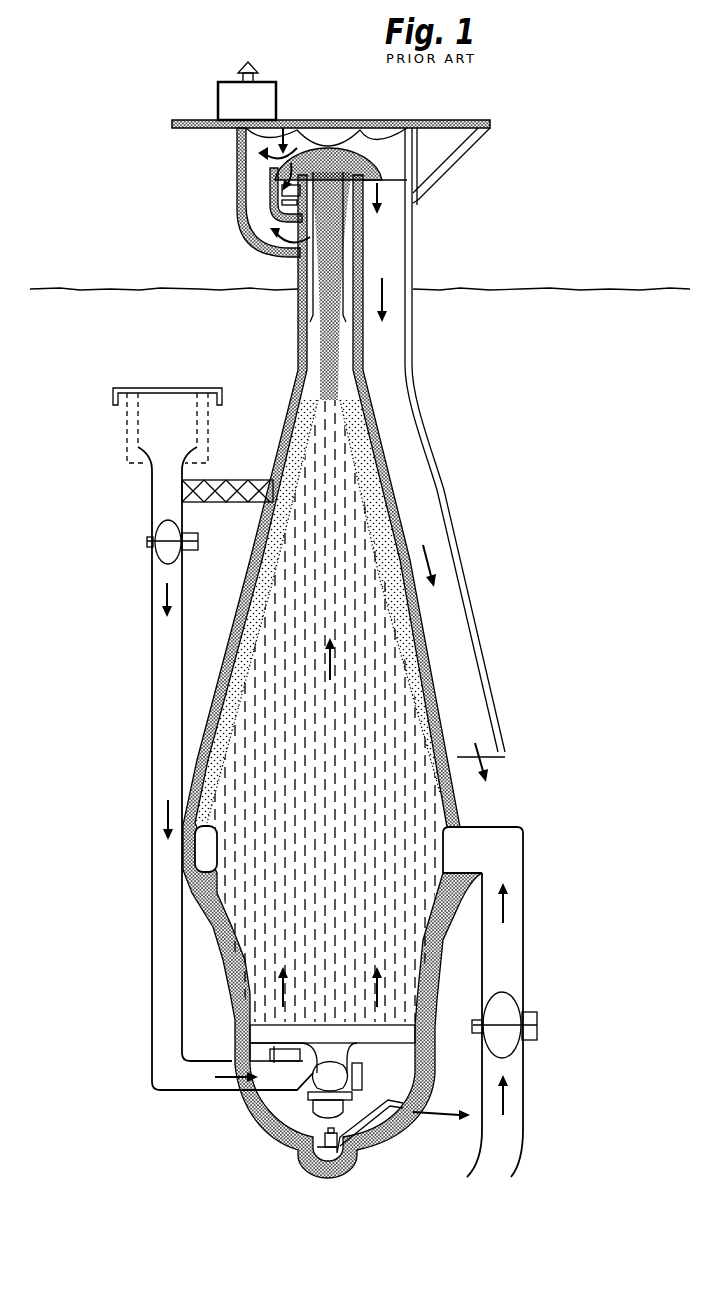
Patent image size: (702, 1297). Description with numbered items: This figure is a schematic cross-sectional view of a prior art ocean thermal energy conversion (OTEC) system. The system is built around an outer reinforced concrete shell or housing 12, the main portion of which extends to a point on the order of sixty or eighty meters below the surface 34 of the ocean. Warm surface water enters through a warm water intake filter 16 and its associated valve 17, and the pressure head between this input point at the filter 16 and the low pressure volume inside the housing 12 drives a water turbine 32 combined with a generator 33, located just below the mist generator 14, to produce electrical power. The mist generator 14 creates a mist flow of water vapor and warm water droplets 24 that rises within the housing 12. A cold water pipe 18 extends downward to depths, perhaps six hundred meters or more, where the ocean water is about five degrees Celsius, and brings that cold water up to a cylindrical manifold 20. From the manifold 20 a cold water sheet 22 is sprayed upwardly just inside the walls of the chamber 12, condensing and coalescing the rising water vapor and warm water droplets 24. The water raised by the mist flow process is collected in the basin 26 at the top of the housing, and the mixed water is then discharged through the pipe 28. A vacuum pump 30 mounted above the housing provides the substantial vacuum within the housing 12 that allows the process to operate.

The outer reinforced concrete shell or housing 12 is at (250, 584).
The mist generator 14 is at (384, 1035).
The warm water intake filter 16 is at (198, 424).
The valve 17 is at (163, 551).
The cold water pipe 18 is at (515, 1140).
The cylindrical manifold 20 is at (210, 845).
The cold water sheet 22 is at (240, 717).
The water vapor and warm water droplets 24 is at (346, 771).
The basin 26 is at (275, 180).
The pipe 28 is at (445, 613).
The vacuum pump 30 is at (228, 98).
The water turbine 32 is at (315, 1080).
The generator 33 is at (340, 1107).
The surface of the ocean 34 is at (540, 287).